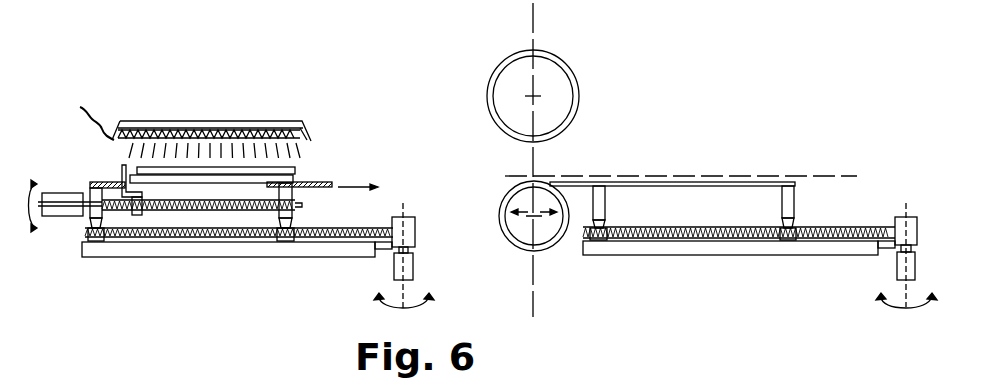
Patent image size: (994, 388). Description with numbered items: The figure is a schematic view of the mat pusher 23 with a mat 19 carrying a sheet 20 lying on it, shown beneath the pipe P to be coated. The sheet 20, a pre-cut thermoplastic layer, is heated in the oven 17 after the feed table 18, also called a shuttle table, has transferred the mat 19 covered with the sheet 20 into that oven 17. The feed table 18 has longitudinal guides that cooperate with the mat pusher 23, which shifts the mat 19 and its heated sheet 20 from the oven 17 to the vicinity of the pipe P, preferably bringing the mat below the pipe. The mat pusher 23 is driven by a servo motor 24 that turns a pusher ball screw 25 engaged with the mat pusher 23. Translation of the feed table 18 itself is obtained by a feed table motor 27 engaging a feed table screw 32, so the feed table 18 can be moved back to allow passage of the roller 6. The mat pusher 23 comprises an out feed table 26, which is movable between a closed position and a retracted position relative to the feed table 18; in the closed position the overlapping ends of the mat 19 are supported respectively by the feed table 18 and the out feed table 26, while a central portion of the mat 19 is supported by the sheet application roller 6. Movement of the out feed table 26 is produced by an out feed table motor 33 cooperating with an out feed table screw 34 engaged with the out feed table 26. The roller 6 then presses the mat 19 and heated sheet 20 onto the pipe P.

The oven 17 is at (180, 122).
The sheet 20 is at (287, 168).
The mat 19 is at (292, 178).
The feed table 18 is at (319, 182).
The mat pusher 23 is at (123, 168).
The servo motor 24 is at (57, 208).
The pusher ball screw 25 is at (217, 212).
The feed table screw 32 is at (322, 240).
The feed table motor 27 is at (398, 262).
The pipe P is at (562, 63).
The out feed table 26 is at (677, 184).
The sheet application roller 6 is at (502, 228).
The out feed table screw 34 is at (713, 240).
The out feed table motor 33 is at (900, 263).